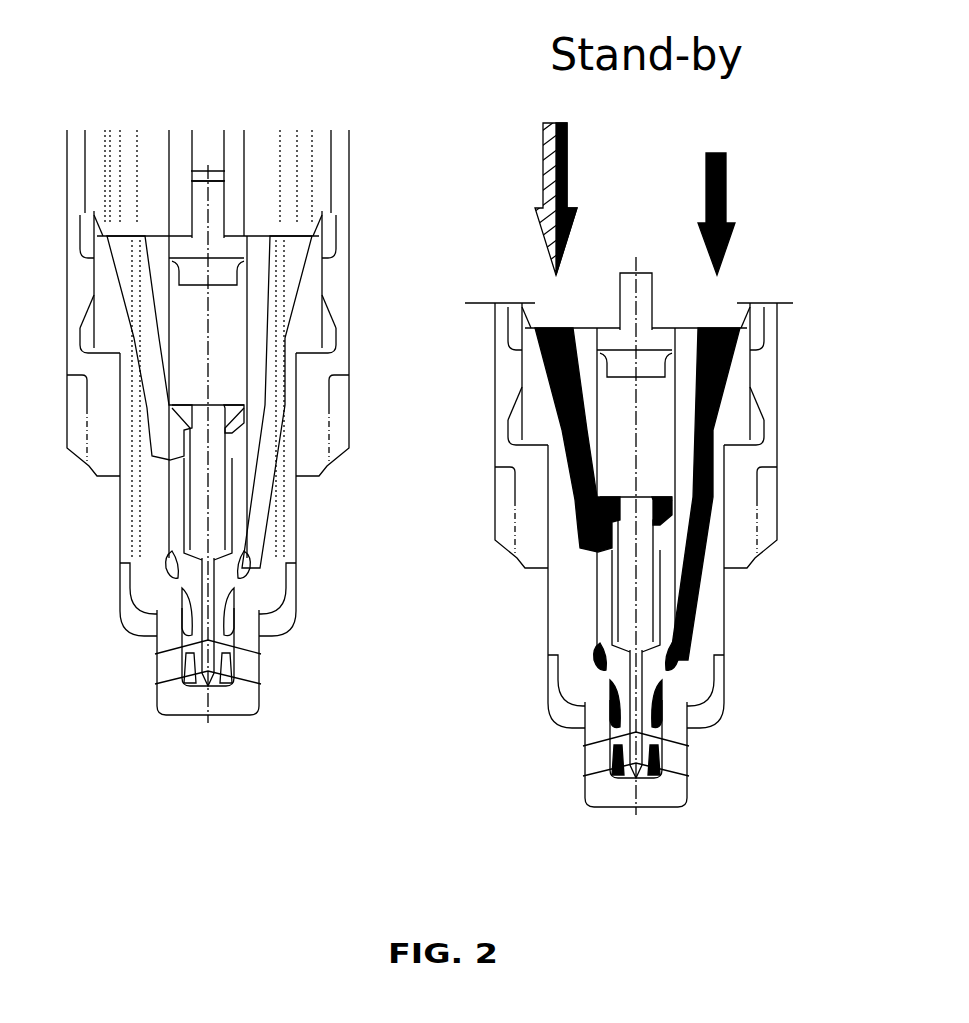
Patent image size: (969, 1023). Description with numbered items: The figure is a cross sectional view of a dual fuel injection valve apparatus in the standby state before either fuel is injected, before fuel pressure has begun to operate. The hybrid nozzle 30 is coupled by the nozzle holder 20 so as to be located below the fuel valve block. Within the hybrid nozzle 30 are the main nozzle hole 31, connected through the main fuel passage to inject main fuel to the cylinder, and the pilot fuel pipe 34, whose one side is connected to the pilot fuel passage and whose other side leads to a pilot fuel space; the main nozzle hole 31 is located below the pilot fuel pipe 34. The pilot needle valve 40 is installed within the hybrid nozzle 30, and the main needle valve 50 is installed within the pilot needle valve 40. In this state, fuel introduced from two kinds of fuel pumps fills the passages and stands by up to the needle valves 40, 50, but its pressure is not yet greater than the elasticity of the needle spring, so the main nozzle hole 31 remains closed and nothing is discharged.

The nozzle holder 20 is at (547, 711).
The hybrid nozzle 30 is at (582, 798).
The main nozzle hole 31 is at (562, 478).
The pilot fuel pipe 34 is at (700, 573).
The pilot needle valve 40 is at (652, 683).
The main needle valve 50 is at (623, 583).